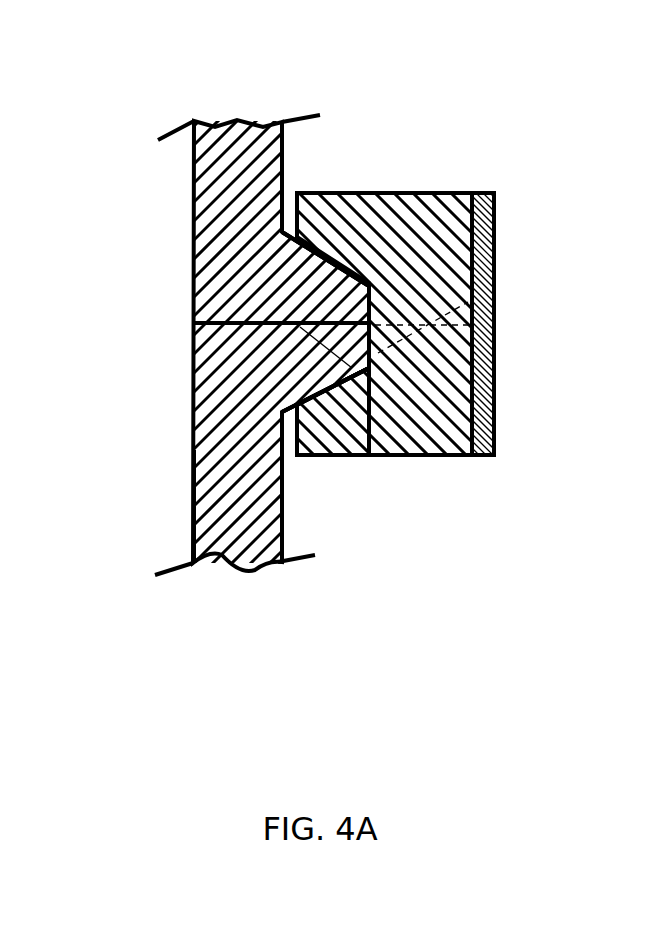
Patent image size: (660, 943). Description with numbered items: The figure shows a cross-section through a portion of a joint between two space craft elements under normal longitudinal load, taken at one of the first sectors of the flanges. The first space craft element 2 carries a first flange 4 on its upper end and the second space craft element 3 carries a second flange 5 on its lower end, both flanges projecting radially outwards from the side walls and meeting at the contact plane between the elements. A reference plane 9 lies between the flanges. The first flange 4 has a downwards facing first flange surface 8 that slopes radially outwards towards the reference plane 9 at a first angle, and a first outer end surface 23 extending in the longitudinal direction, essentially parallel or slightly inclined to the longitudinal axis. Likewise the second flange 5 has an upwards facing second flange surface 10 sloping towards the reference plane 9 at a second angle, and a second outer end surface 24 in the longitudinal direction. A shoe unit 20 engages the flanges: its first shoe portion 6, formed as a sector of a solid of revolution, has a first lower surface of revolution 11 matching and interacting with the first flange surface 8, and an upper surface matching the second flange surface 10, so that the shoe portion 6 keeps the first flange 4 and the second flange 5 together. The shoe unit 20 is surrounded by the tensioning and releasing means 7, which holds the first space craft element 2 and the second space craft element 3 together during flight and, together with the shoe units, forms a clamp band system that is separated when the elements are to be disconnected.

The first space craft element 2 is at (225, 493).
The second space craft element 3 is at (205, 193).
The first flange 4 is at (370, 352).
The second flange 5 is at (300, 302).
The first shoe portion 6 is at (433, 207).
The tensioning and releasing means 7 is at (485, 217).
The first flange surface 8 is at (365, 370).
The reference plane 9 is at (194, 322).
The second flange surface 10 is at (300, 262).
The first lower surface of revolution 11 is at (333, 420).
The shoe unit 20 is at (407, 430).
The first outer end surface 23 is at (495, 377).
The second outer end surface 24 is at (372, 292).